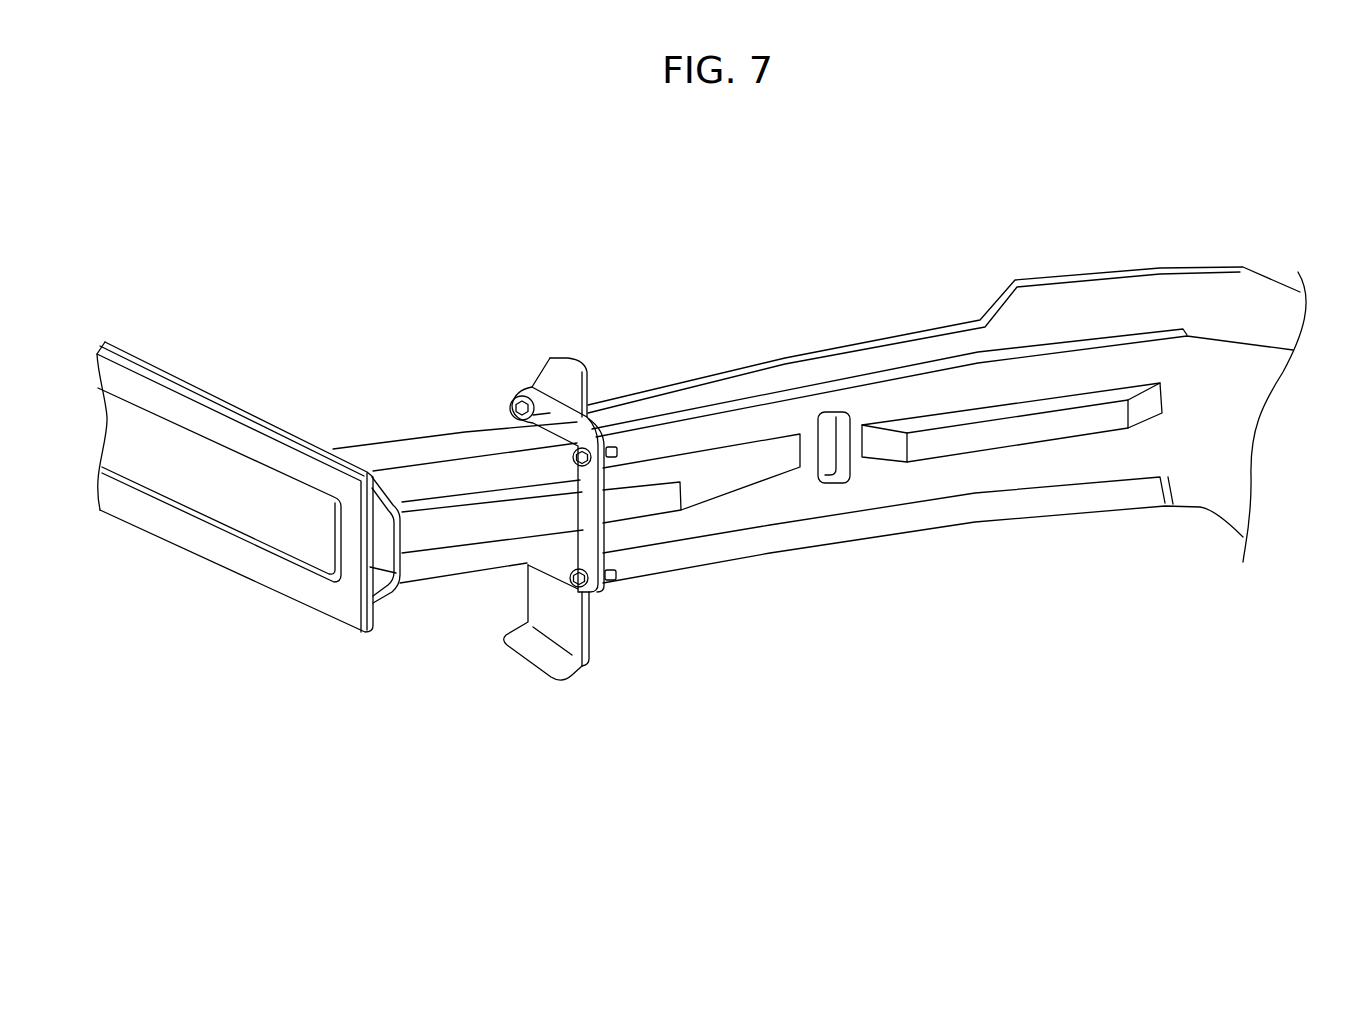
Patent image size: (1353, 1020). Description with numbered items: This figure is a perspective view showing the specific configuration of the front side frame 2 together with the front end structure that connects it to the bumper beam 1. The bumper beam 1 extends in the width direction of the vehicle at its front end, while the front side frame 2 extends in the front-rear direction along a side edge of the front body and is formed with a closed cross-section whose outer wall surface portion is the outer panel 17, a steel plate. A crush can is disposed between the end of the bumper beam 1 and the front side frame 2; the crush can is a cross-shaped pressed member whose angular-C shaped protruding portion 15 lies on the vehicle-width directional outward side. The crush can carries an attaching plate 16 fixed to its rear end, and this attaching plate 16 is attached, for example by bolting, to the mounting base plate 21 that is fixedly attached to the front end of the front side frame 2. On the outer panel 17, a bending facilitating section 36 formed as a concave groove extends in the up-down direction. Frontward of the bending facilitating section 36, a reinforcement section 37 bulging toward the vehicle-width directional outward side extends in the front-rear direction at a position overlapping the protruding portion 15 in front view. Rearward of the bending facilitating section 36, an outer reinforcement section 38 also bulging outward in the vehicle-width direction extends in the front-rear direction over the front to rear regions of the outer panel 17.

The bumper beam 1 is at (158, 552).
The front side frame 2 is at (765, 341).
The protruding portion 15 is at (476, 532).
The attaching plate 16 is at (511, 404).
The outer panel 17 is at (868, 467).
The mounting base plate 21 is at (568, 357).
The bending facilitating section 36 is at (845, 440).
The reinforcement section 37 is at (725, 482).
The outer reinforcement section 38 is at (1023, 432).